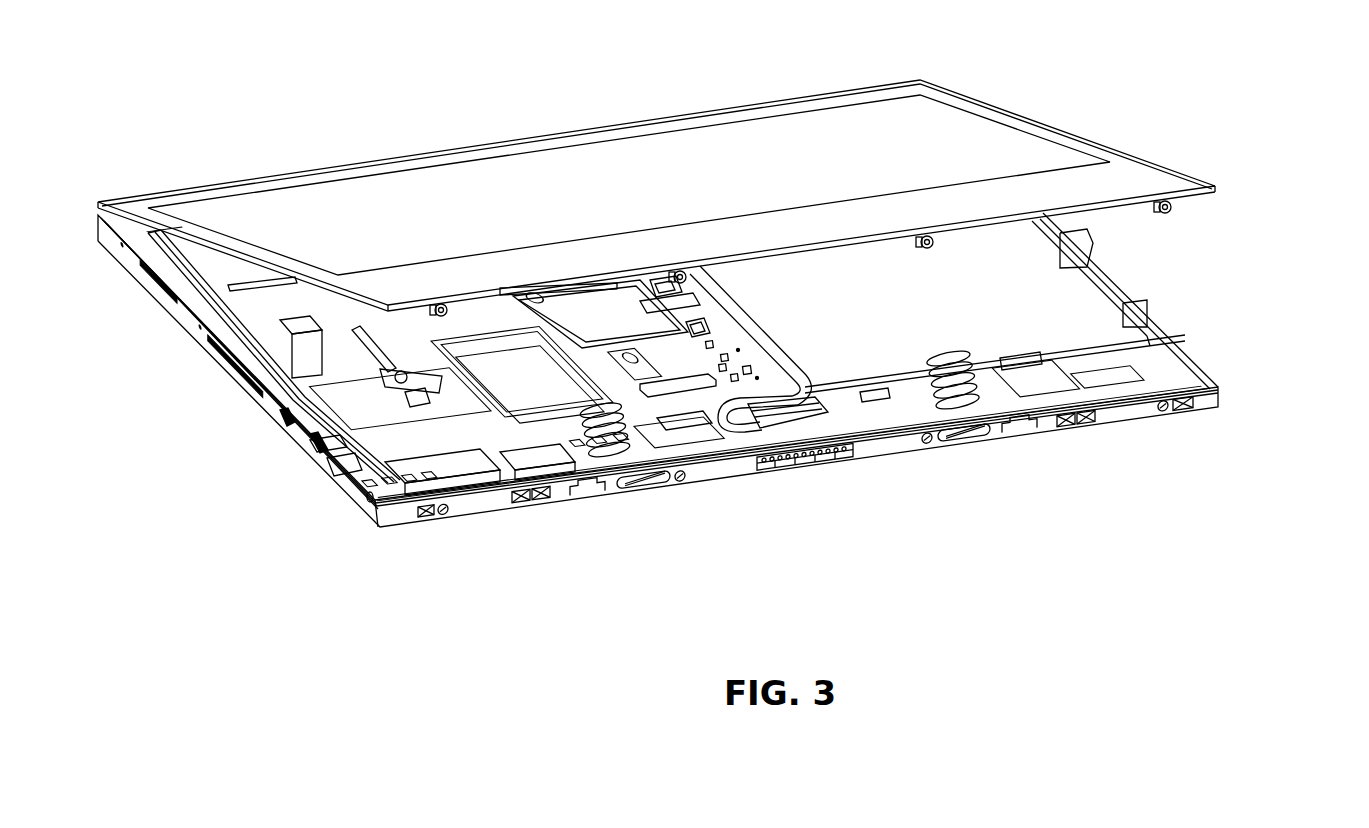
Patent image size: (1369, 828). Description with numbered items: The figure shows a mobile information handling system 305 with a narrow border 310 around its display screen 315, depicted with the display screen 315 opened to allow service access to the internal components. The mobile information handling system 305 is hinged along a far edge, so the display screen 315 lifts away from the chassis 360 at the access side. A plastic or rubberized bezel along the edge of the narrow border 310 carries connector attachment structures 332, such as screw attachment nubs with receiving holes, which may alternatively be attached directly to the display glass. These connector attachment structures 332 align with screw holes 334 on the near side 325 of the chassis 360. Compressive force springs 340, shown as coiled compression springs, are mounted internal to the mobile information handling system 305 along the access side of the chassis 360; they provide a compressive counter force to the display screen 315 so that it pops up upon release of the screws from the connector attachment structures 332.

The mobile information handling system 305 is at (520, 115).
The narrow border 310 is at (1030, 128).
The display screen 315 is at (758, 148).
The near side 325 is at (1232, 396).
The connector attachment structures 332 is at (680, 270).
The screw holes 334 is at (448, 516).
The compressive force springs 340 is at (637, 492).
The chassis 360 is at (836, 476).